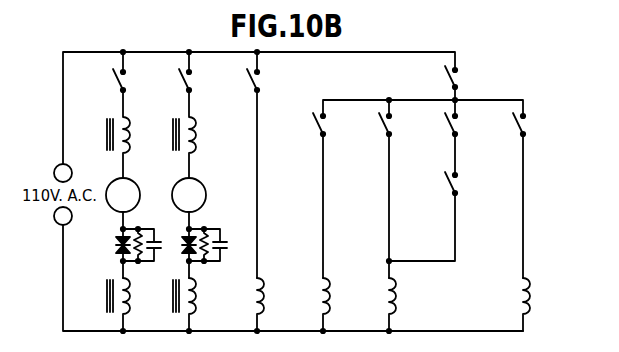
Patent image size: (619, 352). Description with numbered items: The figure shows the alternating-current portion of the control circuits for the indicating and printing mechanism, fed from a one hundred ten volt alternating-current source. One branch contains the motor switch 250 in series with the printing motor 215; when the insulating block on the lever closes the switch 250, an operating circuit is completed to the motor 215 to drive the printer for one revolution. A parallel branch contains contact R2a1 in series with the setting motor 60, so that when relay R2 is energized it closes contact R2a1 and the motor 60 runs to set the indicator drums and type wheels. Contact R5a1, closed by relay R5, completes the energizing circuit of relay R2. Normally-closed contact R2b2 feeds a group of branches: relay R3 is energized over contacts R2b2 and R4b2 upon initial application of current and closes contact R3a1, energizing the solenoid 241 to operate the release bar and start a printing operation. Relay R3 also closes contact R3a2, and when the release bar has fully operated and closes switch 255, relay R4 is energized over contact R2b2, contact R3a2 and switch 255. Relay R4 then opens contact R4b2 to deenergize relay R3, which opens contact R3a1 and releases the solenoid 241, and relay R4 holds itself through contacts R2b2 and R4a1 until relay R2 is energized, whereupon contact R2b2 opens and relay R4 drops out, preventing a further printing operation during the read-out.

The motor switch 250 is at (117, 80).
The motor 215 is at (128, 181).
The motor 60 is at (195, 181).
The switch 255 is at (452, 185).
The solenoid 241 is at (530, 292).
The contact R2a1 is at (186, 80).
The contact R5a1 is at (254, 80).
The normally-closed contact R2b2 is at (452, 78).
The normally-closed contact R4b2 is at (320, 126).
The contact R4a1 is at (386, 126).
The contact R3a2 is at (452, 126).
The contact R3a1 is at (520, 126).
The relay R2 is at (264, 292).
The relay R3 is at (330, 292).
The relay R4 is at (396, 292).